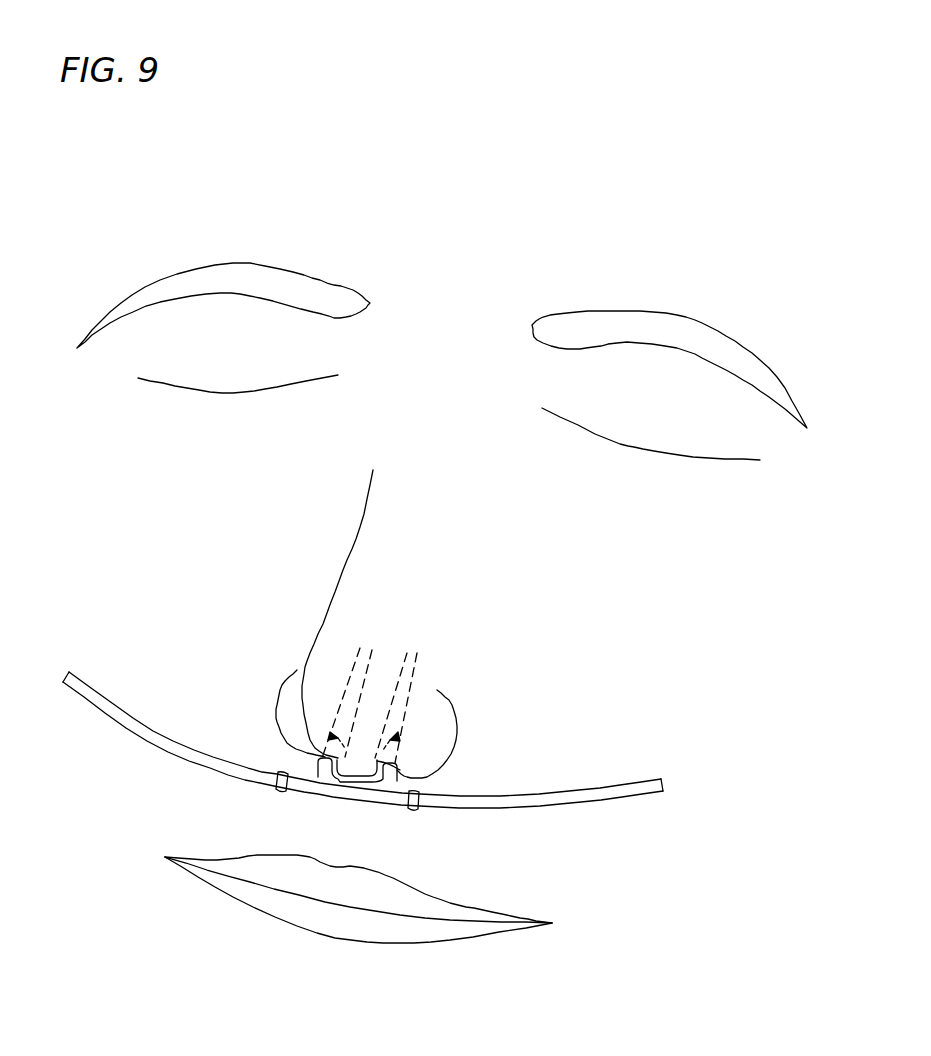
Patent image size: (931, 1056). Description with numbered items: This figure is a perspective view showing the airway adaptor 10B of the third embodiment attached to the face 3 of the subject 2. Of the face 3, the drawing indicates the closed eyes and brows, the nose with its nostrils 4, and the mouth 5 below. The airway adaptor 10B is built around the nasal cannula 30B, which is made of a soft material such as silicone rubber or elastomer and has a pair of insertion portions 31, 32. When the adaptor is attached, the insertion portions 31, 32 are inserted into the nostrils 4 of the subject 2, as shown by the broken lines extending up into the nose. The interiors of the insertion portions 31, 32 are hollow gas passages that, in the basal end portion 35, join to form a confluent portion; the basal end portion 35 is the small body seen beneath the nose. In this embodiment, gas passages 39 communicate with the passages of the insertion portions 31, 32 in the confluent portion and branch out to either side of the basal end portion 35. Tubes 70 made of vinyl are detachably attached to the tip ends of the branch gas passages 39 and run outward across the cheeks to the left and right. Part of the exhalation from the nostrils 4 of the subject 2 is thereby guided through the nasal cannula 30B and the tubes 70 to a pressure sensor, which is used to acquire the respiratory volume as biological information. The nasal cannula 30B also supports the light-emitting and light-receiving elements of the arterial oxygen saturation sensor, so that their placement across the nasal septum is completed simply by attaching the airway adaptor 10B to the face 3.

The subject 2 is at (133, 214).
The face 3 is at (92, 562).
The nostrils 4 is at (352, 660).
The mouth 5 is at (447, 930).
The airway adaptor 10B is at (485, 826).
The nasal cannula 30B is at (238, 791).
The insertion portion 31 is at (398, 732).
The insertion portion 32 is at (330, 732).
The basal end portion 35 is at (345, 794).
The gas passages 39 is at (290, 792).
The tubes 70 is at (122, 708).